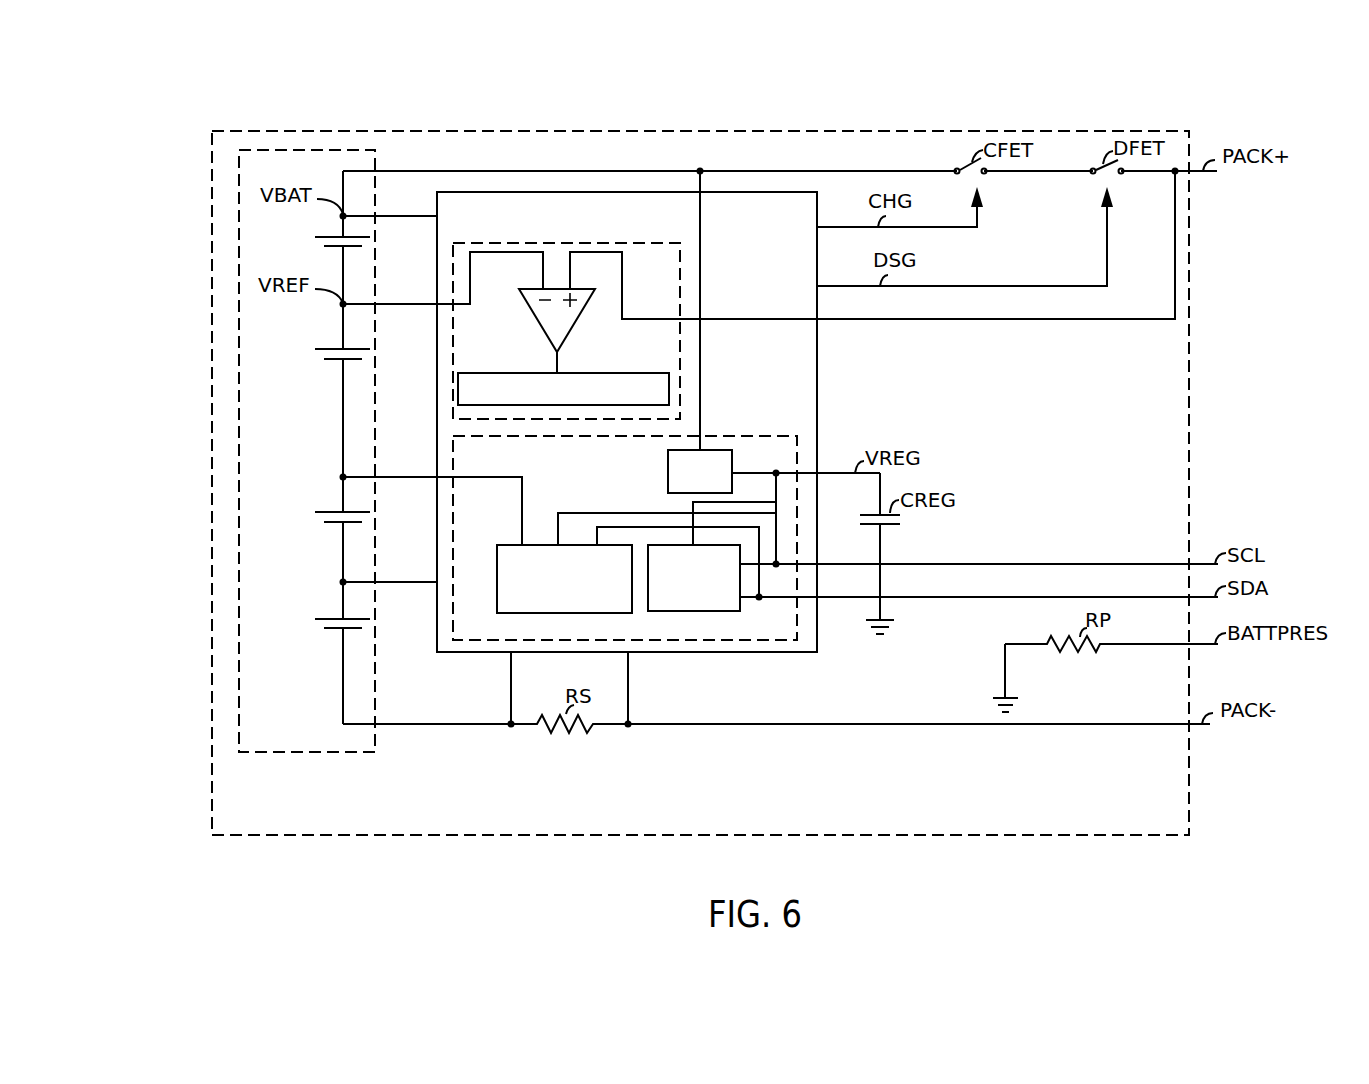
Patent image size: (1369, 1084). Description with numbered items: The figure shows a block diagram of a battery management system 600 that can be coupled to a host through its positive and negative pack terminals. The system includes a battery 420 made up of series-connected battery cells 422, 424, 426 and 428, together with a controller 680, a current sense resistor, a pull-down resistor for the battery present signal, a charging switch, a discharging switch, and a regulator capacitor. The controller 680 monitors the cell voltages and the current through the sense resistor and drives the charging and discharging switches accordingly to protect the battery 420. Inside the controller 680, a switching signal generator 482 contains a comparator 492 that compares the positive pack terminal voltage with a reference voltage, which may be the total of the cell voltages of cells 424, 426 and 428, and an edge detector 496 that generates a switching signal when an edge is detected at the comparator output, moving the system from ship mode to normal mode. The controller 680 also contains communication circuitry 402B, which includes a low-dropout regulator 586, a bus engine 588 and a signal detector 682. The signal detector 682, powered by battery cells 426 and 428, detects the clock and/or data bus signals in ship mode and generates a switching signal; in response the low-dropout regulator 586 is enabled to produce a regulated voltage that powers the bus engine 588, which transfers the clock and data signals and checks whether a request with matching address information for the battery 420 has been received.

The battery management system 600 is at (174, 147).
The battery 420 is at (310, 752).
The battery cell 422 is at (340, 237).
The battery cell 424 is at (340, 349).
The battery cell 426 is at (340, 512).
The battery cell 428 is at (340, 618).
The controller 680 is at (817, 392).
The switching signal generator 482 is at (511, 318).
The comparator 492 is at (537, 321).
The edge detector 496 is at (592, 373).
The communication circuitry 402B is at (666, 515).
The low-dropout regulator (LDO) 586 is at (668, 464).
The signal detector 682 is at (497, 600).
The bus engine 588 is at (740, 603).